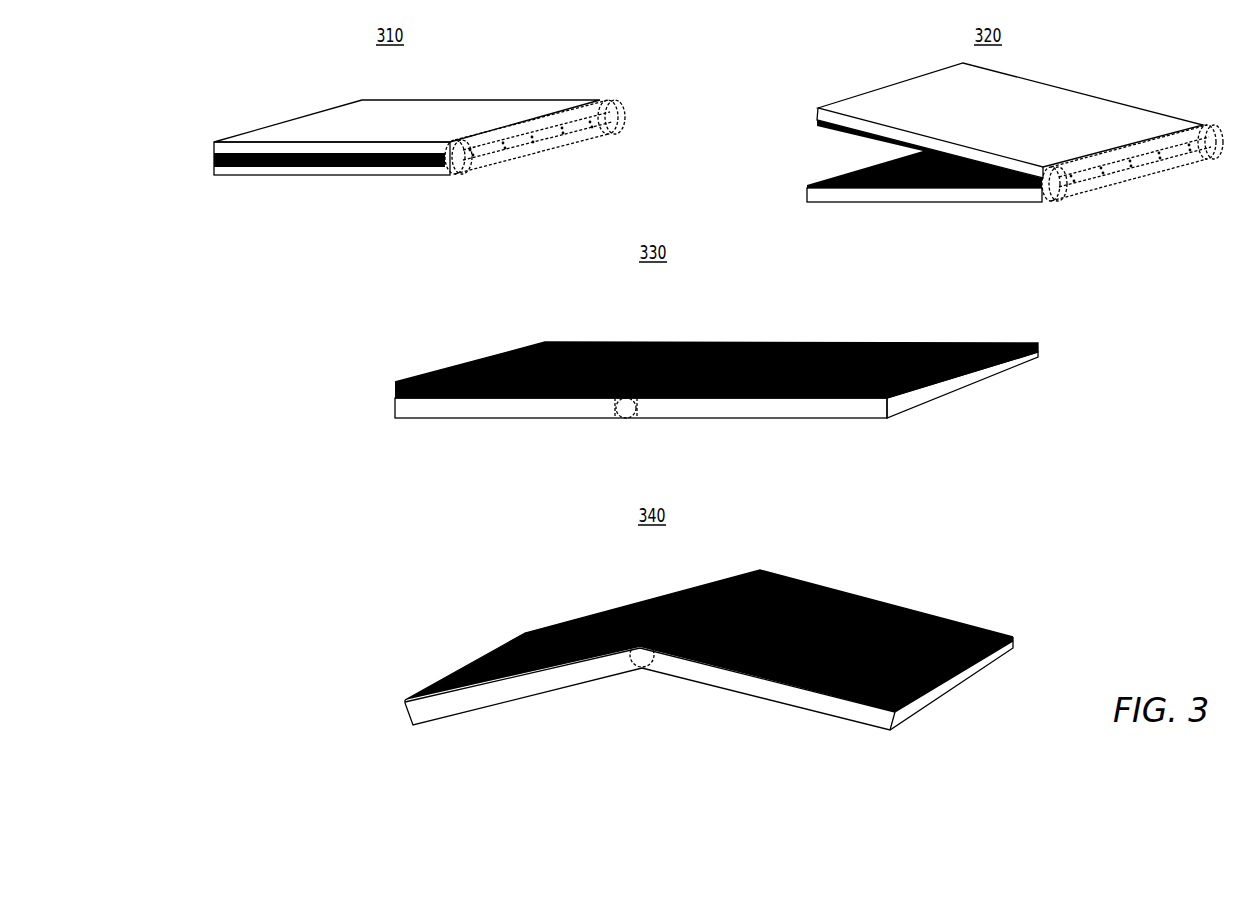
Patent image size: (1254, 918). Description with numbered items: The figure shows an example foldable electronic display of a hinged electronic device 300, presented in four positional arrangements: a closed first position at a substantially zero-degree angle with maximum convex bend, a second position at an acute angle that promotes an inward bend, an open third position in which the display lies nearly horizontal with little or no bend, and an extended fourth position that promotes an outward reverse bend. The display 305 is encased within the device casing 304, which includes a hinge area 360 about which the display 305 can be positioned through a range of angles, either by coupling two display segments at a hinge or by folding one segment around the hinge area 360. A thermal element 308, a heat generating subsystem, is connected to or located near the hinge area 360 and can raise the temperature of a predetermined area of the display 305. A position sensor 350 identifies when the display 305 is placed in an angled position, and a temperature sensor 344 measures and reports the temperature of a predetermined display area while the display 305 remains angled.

The electronic device 300 is at (700, 381).
The device casing 304 is at (352, 175).
The display 305 is at (211, 164).
The thermal element 308 is at (518, 148).
The temperature sensor 344 is at (583, 128).
The position sensor 350 is at (455, 175).
The hinge area 360 is at (593, 103).